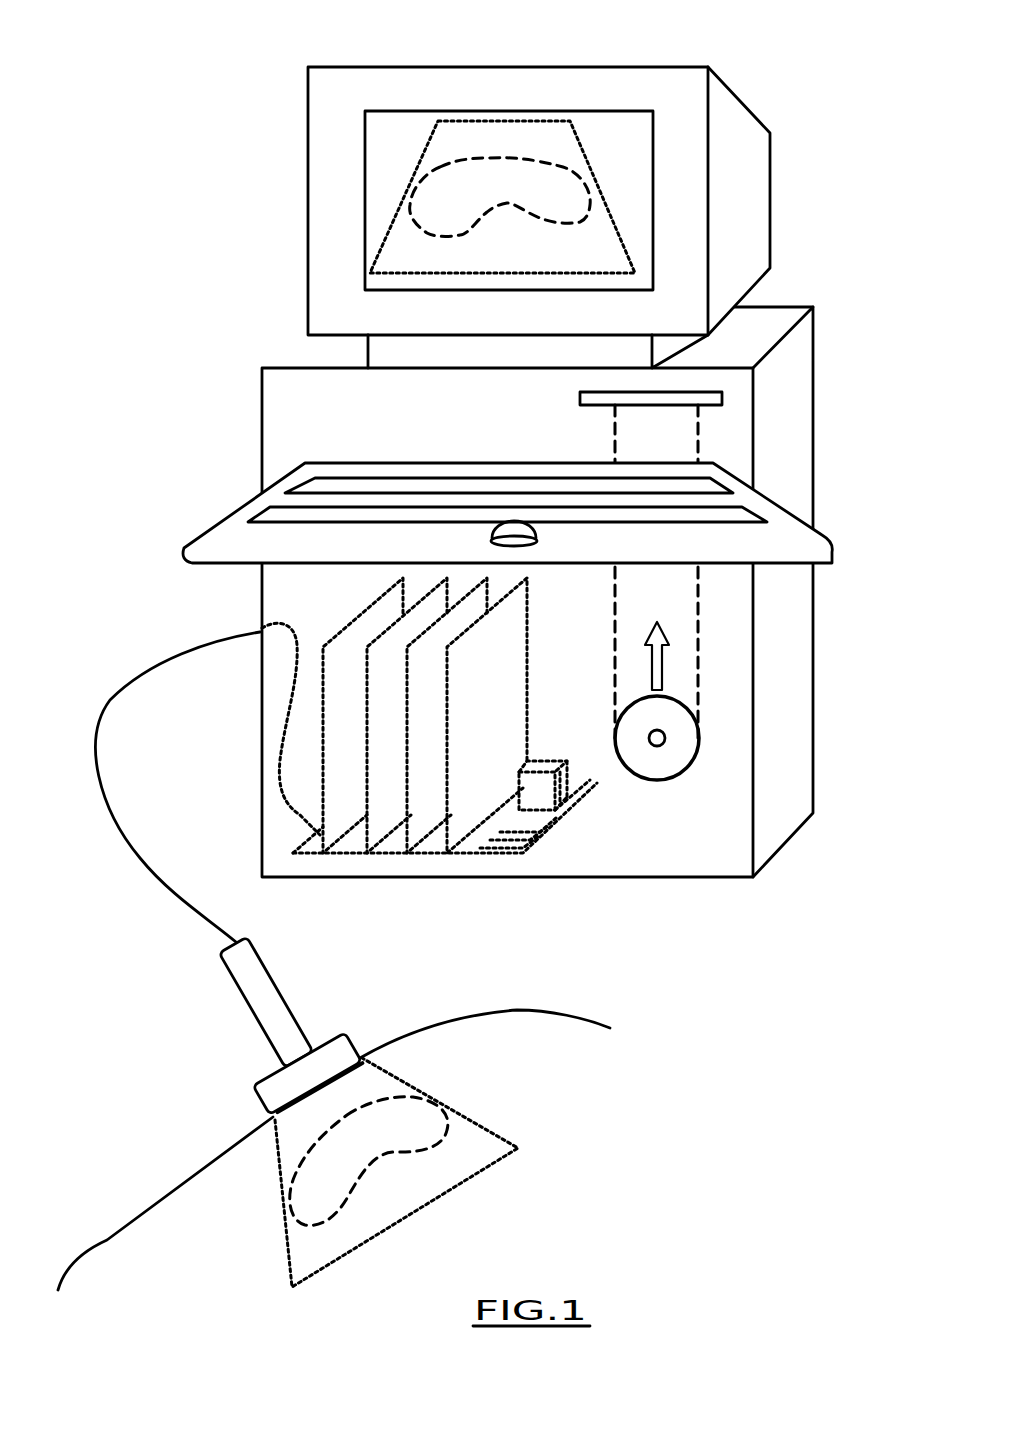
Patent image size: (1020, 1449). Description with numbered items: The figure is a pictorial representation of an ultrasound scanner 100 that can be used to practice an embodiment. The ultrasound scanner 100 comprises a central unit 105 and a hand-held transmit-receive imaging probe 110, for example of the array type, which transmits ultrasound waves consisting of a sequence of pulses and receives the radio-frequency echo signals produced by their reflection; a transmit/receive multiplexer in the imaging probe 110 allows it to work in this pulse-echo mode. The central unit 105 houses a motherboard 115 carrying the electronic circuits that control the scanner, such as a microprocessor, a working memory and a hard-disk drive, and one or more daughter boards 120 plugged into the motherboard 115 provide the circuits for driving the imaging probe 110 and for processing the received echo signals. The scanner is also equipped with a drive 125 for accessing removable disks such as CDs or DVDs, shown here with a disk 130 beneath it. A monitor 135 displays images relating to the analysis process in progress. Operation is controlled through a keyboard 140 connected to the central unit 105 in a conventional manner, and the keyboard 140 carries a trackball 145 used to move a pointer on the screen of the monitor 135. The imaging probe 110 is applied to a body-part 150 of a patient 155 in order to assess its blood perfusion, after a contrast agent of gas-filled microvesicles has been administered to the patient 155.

The ultrasound scanner 100 is at (805, 997).
The central unit 105 is at (584, 558).
The hand-held transmit-receive imaging probe 110 is at (251, 874).
The motherboard 115 is at (583, 812).
The daughter boards 120 is at (377, 715).
The drive 125 is at (600, 565).
The disk drive 130 is at (617, 701).
The monitor 135 is at (533, 184).
The keyboard 140 is at (484, 545).
The trackball 145 is at (462, 542).
The body-part 150 is at (425, 1172).
The patient 155 is at (334, 1120).